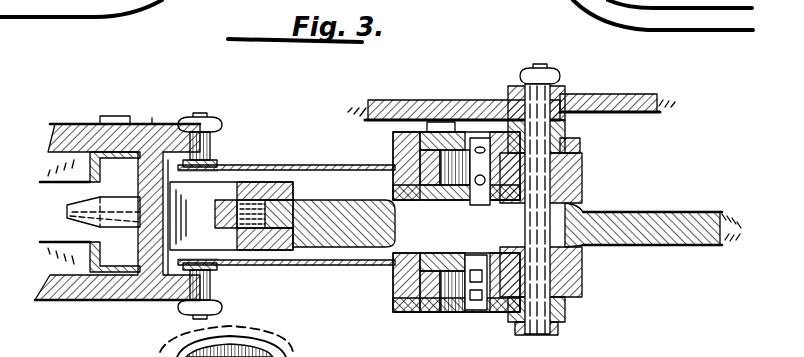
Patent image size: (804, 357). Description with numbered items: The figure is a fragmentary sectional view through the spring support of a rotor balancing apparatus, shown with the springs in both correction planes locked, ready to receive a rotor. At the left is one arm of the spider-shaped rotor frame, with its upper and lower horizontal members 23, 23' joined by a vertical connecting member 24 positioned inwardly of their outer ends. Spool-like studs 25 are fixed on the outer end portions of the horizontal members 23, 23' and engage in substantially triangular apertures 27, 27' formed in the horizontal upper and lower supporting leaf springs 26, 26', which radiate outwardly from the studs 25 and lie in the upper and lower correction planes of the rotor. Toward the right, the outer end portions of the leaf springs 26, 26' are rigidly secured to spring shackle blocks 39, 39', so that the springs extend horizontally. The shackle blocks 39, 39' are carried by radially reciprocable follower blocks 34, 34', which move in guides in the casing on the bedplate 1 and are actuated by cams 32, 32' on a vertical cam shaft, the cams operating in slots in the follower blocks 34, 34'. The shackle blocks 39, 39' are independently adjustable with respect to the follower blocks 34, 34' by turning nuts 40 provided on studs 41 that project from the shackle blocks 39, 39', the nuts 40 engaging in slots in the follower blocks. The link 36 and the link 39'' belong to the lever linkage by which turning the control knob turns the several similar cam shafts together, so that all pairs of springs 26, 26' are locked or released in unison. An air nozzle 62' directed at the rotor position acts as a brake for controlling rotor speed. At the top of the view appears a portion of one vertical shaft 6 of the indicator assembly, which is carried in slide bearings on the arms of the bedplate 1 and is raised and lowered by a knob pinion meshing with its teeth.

The bedplate 1 is at (689, 212).
The vertical shaft 6 is at (163, 9).
The upper horizontal member 23 is at (117, 192).
The lower horizontal member 23' is at (94, 244).
The vertical connecting member 24 is at (146, 176).
The spool-like stud 25 is at (214, 152).
The upper supporting leaf spring 26 is at (286, 151).
The lower supporting leaf spring 26' is at (286, 287).
The triangular aperture 27 is at (227, 154).
The triangular aperture 27' is at (234, 280).
The cam 32 is at (570, 108).
The cam 32' is at (575, 320).
The follower block 34 is at (568, 180).
The follower block 34' is at (573, 272).
The link 36 is at (400, 100).
The spring shackle block 39 is at (433, 164).
The spring shackle block 39' is at (434, 288).
The link 39'' is at (617, 83).
The nut 40 is at (477, 100).
The stud 41 is at (488, 305).
The air nozzle 62' is at (130, 212).